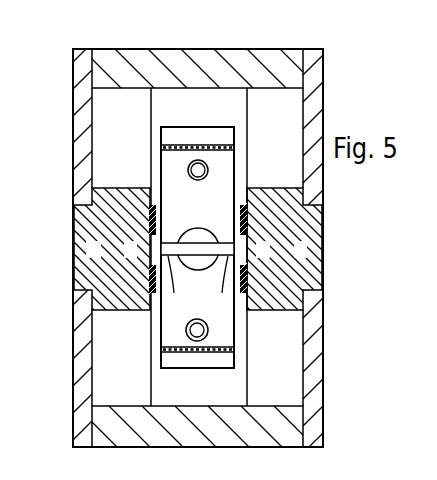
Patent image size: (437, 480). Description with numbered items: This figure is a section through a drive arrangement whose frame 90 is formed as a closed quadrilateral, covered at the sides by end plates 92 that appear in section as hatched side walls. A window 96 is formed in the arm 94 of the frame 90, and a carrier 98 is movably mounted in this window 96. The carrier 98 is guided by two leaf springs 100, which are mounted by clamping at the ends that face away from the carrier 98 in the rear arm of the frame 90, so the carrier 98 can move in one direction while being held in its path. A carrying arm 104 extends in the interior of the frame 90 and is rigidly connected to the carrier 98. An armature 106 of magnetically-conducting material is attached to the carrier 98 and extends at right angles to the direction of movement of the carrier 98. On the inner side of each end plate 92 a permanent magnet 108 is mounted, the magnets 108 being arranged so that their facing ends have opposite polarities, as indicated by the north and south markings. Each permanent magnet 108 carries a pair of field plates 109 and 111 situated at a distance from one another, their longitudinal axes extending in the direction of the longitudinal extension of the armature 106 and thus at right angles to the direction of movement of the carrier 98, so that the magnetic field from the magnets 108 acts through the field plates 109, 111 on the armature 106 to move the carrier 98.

The frame 90 is at (122, 58).
The plates 92 is at (82, 81).
The arm 94 is at (108, 365).
The window 96 is at (227, 390).
The carrier 98 is at (170, 175).
The leaf springs 100 is at (228, 148).
The carrying arm 104 is at (195, 270).
The armature 106 is at (196, 288).
The permanent magnet 108 is at (105, 221).
The field plate 109 is at (237, 209).
The field plate 111 is at (149, 289).